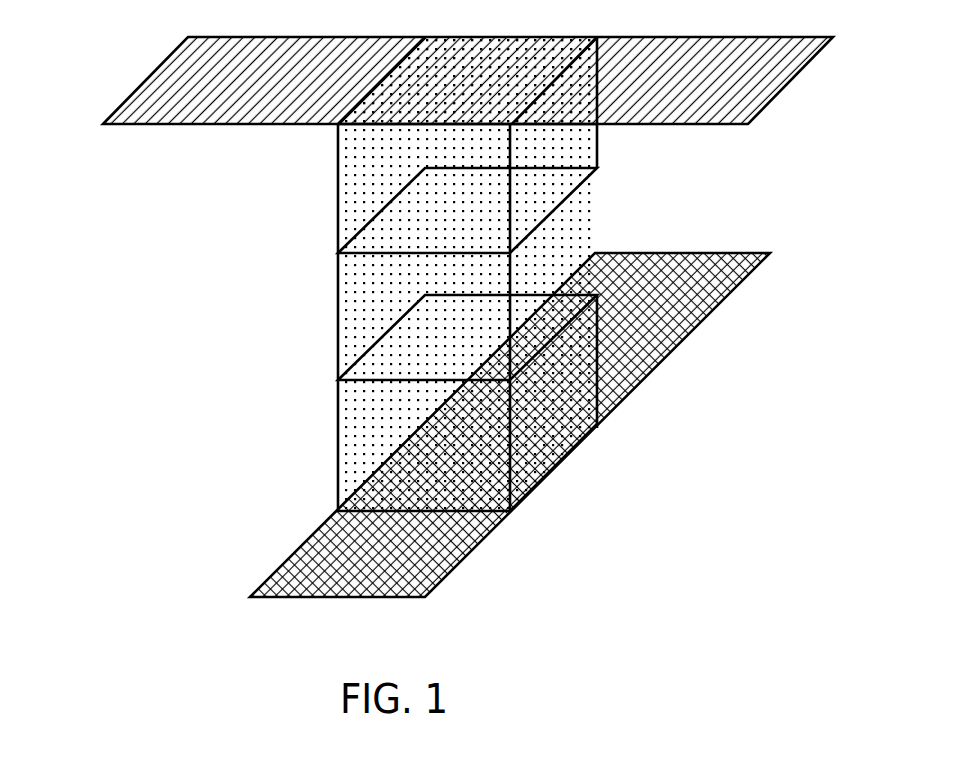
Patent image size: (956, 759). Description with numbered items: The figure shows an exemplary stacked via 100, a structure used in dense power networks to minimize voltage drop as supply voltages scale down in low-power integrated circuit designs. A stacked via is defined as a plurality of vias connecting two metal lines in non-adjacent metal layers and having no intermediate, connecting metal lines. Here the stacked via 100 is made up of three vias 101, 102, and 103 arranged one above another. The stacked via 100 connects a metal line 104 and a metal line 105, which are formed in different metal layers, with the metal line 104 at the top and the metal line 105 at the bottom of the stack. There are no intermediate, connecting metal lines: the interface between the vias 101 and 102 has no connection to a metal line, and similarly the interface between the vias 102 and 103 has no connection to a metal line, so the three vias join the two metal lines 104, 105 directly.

The stacked via 100 is at (447, 317).
The via 101 is at (431, 188).
The via 102 is at (431, 316).
The via 103 is at (430, 445).
The metal line 104 is at (479, 80).
The metal line 105 is at (510, 425).